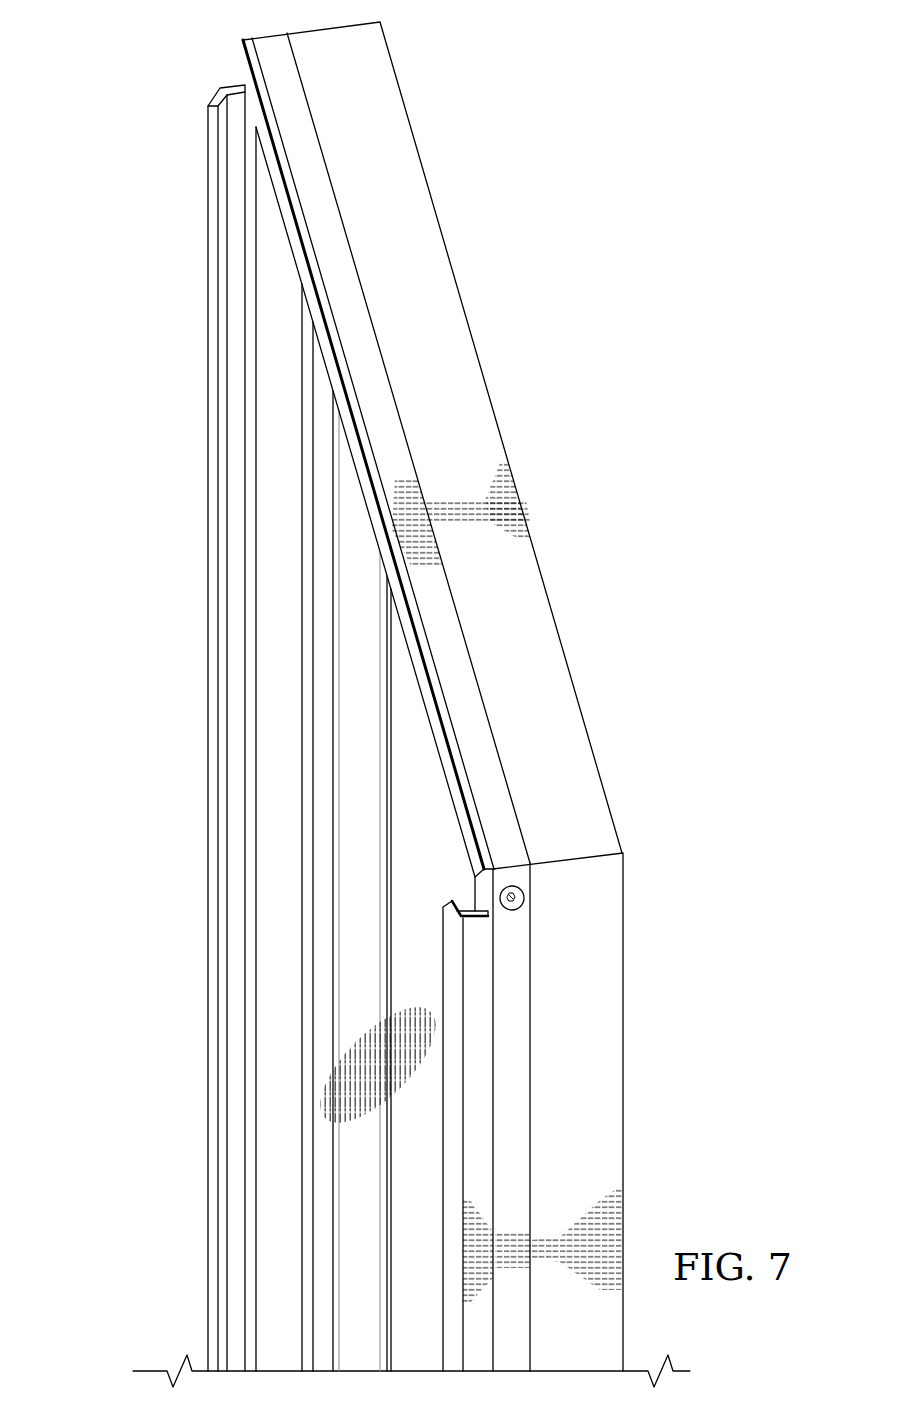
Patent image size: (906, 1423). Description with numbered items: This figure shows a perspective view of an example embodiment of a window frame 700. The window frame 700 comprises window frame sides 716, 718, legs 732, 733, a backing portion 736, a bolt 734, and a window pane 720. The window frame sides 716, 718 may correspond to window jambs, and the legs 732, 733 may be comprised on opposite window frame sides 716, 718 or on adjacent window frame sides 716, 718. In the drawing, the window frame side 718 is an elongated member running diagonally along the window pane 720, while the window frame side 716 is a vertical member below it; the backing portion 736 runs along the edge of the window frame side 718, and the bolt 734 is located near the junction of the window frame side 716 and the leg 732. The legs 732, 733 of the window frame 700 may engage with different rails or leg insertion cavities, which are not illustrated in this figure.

The window frame 700 is at (86, 81).
The window frame side 716 is at (613, 1100).
The window frame side 718 is at (435, 258).
The window pane 720 is at (415, 929).
The leg 732 is at (453, 1012).
The leg 733 is at (208, 1278).
The bolt 734 is at (525, 900).
The backing portion 736 is at (295, 232).